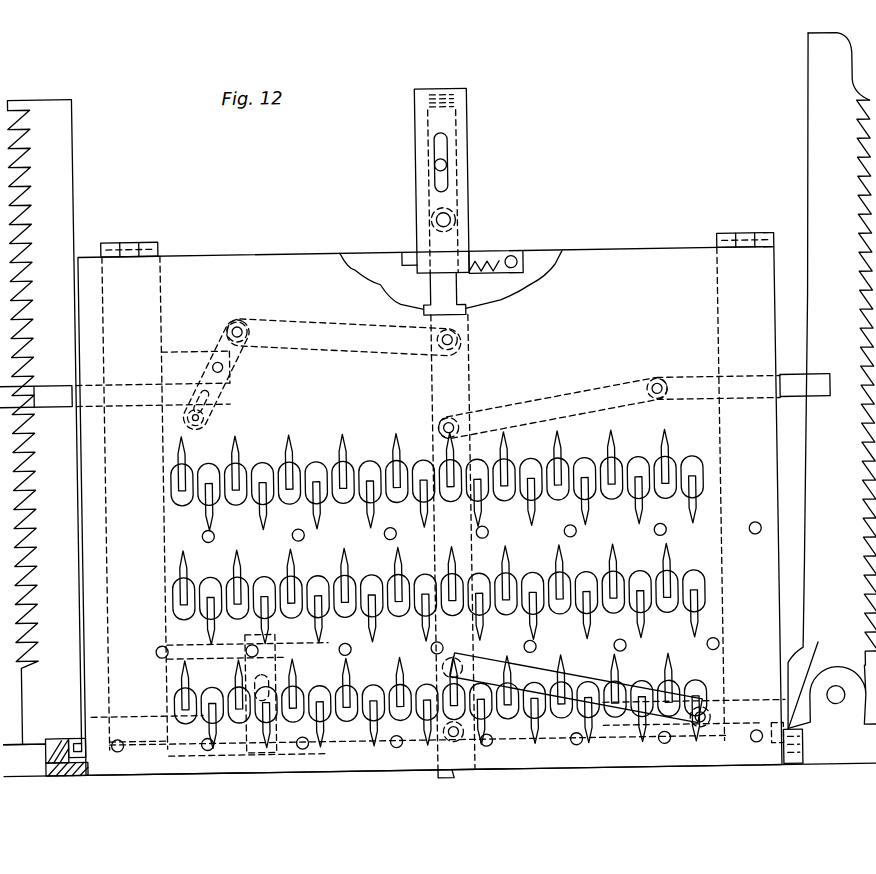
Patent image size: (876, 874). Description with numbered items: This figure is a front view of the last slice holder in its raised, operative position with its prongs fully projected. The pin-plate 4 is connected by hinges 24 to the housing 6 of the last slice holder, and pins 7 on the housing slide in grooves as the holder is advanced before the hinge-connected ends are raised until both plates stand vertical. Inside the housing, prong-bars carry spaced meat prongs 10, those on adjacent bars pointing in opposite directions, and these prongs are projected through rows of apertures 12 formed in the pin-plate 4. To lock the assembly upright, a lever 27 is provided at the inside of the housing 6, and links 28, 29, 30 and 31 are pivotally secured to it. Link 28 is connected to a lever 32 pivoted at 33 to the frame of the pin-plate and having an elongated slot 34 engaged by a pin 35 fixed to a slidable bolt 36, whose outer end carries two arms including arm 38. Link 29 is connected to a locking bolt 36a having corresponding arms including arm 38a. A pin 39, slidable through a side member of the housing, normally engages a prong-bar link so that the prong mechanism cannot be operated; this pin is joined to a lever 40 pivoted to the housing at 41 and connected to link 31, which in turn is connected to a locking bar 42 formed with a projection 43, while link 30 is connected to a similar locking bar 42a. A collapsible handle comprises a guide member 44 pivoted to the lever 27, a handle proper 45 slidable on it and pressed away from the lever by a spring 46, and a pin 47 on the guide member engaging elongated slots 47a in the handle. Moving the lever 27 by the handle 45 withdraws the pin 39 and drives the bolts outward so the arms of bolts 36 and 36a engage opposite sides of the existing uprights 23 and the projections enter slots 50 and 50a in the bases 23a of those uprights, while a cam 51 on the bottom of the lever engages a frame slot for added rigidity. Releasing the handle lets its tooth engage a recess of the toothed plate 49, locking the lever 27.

The pin-plate 4 is at (672, 250).
The housing 6 is at (540, 258).
The pins 7 is at (792, 768).
The meat prongs 10 is at (292, 468).
The apertures 12 is at (386, 478).
The uprights 23 is at (60, 197).
The bases of the uprights 23a is at (59, 774).
The hinges 24 is at (140, 238).
The lever 27 is at (458, 380).
The link 28 is at (310, 322).
The link 29 is at (566, 395).
The link 30 is at (546, 668).
The link 31 is at (352, 735).
The lever 32 is at (226, 364).
The pivot 33 is at (236, 373).
The elongated slot 34 is at (212, 402).
The pin 35 is at (208, 420).
The slidable bolt 36 is at (128, 392).
The locking bolt 36a is at (676, 380).
The arm 38 is at (62, 404).
The arm 38a is at (810, 404).
The pin 39 is at (146, 652).
The lever 40 is at (276, 674).
The pivot 41 is at (250, 678).
The locking bar 42 is at (160, 745).
The locking bar 42a is at (745, 702).
The projection 43 is at (70, 732).
The guide member 44 is at (455, 204).
The handle 45 is at (470, 182).
The spring 46 is at (432, 104).
The pin 47 is at (442, 168).
The elongated slots 47a is at (442, 143).
The toothed plate 49 is at (497, 262).
The slot 50 is at (64, 740).
The slot 50a is at (800, 750).
The cam 51 is at (448, 776).